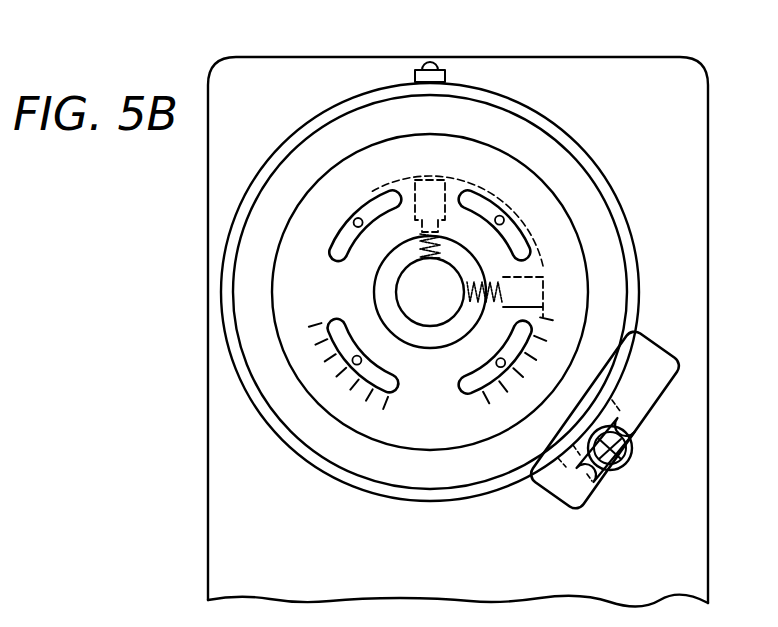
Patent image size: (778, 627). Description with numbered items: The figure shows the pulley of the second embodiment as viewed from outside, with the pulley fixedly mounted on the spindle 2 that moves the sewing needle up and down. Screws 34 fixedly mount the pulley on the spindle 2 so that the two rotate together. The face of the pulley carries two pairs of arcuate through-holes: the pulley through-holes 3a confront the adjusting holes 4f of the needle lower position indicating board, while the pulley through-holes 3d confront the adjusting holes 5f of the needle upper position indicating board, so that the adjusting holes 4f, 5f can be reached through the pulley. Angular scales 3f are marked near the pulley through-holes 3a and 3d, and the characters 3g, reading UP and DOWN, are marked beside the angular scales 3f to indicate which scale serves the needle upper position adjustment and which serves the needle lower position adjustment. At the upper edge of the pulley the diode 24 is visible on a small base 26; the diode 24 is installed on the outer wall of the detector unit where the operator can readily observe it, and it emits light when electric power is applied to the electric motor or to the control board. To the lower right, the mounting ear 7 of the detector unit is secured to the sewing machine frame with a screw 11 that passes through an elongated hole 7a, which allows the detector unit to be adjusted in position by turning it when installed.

The spindle 2 is at (404, 292).
The pulley through-holes 3a is at (541, 253).
The pulley through-holes 3d is at (374, 211).
The angular scales 3f is at (463, 407).
The characters 3g is at (384, 423).
The adjusting holes 4f is at (505, 217).
The adjusting holes 5f is at (458, 366).
The mounting ear 7 is at (655, 381).
The elongated hole 7a is at (598, 475).
The screw 11 is at (632, 460).
The diode 24 is at (428, 66).
The pointer base 26 is at (443, 81).
The screws 34 is at (446, 230).